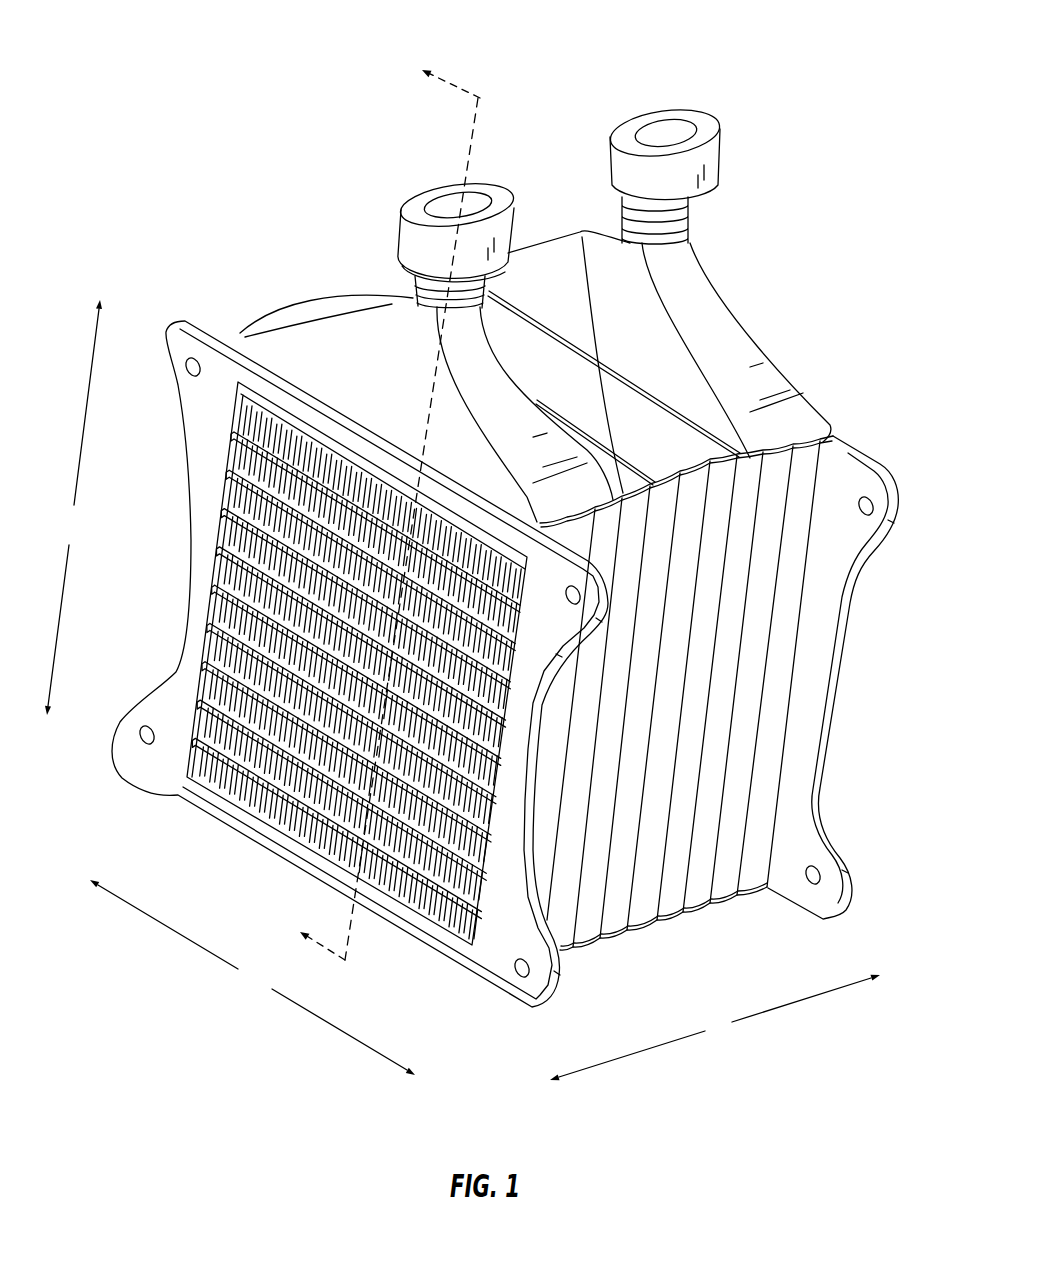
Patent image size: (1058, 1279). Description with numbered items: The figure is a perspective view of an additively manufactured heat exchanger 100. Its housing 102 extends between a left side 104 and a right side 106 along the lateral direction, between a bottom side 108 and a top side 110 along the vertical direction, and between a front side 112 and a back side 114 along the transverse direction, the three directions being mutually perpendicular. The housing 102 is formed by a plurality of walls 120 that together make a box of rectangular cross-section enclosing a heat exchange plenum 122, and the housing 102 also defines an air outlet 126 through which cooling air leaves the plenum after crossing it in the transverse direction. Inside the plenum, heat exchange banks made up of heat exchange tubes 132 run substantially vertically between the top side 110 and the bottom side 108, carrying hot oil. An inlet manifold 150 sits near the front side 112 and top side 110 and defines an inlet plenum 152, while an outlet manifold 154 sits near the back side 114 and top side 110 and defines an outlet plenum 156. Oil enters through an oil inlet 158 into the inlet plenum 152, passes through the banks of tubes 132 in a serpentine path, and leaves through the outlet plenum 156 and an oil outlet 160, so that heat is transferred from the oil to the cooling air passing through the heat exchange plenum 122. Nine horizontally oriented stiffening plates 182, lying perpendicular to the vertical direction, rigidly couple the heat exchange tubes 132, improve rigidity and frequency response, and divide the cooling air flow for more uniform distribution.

The heat exchanger 100 is at (803, 92).
The housing 102 is at (783, 510).
The left side 104 is at (245, 331).
The right side 106 is at (706, 906).
The bottom side 108 is at (591, 958).
The top side 110 is at (671, 435).
The front side 112 is at (140, 710).
The back side 114 is at (903, 512).
The walls 120 is at (722, 748).
The heat exchange plenum 122 is at (727, 649).
The air outlet 126 is at (263, 814).
The heat exchange tubes 132 is at (238, 483).
The inlet manifold 150 is at (388, 337).
The inlet plenum 152 is at (343, 345).
The outlet manifold 154 is at (545, 263).
The outlet plenum 156 is at (590, 270).
The oil inlet 158 is at (449, 201).
The oil outlet 160 is at (668, 128).
The stiffening plates 182 is at (200, 662).